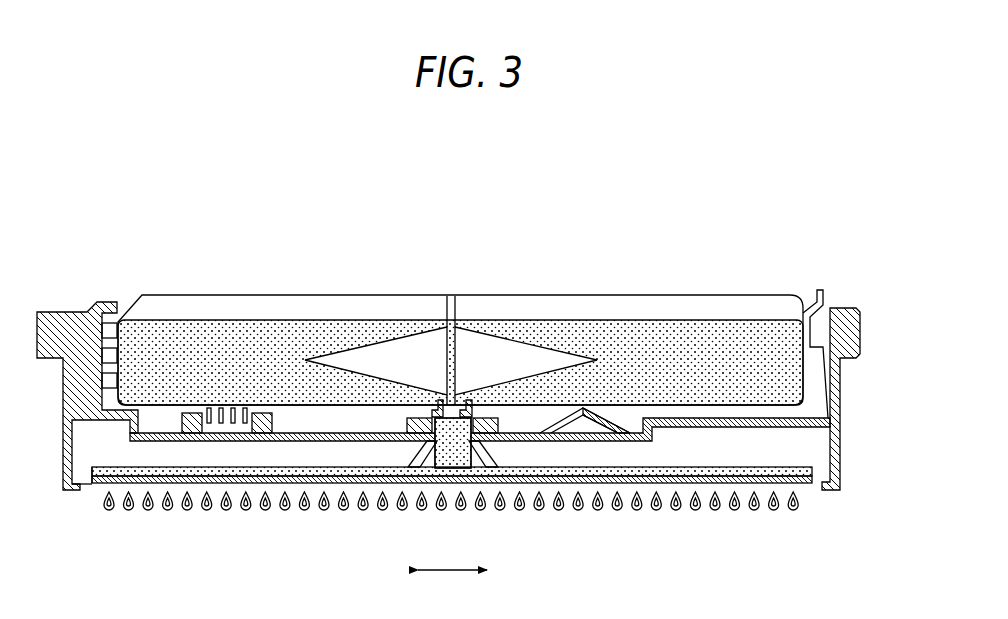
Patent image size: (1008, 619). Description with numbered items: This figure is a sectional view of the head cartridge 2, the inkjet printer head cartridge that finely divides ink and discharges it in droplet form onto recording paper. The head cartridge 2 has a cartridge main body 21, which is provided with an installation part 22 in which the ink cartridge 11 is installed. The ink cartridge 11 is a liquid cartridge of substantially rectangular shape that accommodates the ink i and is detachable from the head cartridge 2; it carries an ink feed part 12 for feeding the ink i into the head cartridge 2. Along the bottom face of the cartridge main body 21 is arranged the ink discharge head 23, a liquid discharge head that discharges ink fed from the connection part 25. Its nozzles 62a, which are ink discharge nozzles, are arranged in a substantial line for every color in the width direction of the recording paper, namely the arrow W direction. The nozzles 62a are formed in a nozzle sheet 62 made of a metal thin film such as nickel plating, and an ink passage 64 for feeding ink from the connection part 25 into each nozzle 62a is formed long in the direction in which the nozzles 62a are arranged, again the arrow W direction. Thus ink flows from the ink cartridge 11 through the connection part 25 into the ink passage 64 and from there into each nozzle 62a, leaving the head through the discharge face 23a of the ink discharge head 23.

The head cartridge 2 is at (762, 227).
The ink cartridge 11 is at (553, 293).
The ink i is at (243, 340).
The installation part 22 is at (117, 318).
The cartridge main body 21 is at (840, 403).
The ink discharge head 23 is at (818, 468).
The discharge face 23a is at (217, 485).
The ink passage 64 is at (95, 487).
The ink feed part 12 is at (410, 413).
The connection part 25 is at (410, 456).
The nozzle sheet 62 is at (813, 487).
The nozzles 62a is at (551, 484).
The arrow W direction W is at (452, 555).